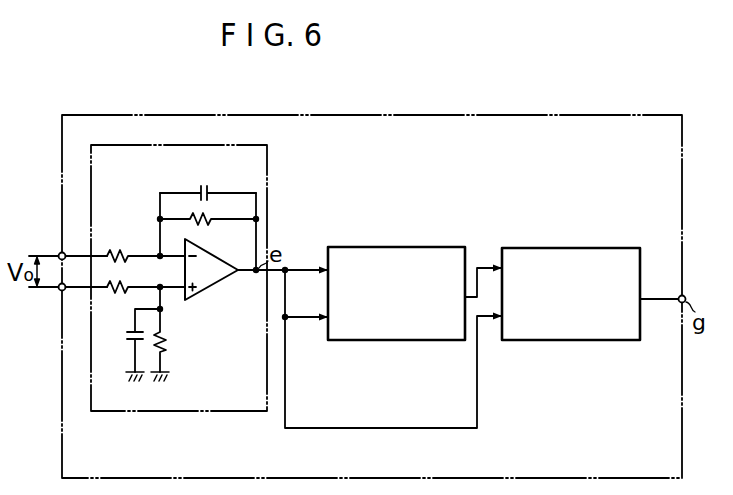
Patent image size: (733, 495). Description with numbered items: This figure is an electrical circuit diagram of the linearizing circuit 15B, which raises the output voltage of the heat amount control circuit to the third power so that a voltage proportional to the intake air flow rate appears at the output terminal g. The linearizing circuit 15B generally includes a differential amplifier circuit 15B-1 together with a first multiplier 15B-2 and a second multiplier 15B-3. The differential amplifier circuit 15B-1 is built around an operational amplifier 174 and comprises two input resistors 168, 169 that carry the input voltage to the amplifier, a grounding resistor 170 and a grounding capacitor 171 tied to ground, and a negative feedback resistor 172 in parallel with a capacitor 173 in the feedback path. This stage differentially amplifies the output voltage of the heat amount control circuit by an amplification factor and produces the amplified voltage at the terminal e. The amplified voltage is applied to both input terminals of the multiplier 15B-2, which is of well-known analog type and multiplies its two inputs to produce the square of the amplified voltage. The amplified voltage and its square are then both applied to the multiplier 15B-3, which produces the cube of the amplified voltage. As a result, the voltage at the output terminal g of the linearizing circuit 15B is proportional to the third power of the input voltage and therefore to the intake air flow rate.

The linearizing circuit 15B is at (445, 114).
The differential amplifier circuit 15B-1 is at (267, 204).
The multiplier 15B-2 is at (391, 247).
The multiplier 15B-3 is at (548, 248).
The input resistor 168 is at (114, 250).
The input resistor 169 is at (113, 292).
The grounding resistor 170 is at (165, 336).
The grounding capacitor 171 is at (128, 338).
The negative feedback resistor 172 is at (210, 222).
The capacitor 173 is at (204, 185).
The operational amplifier 174 is at (217, 292).